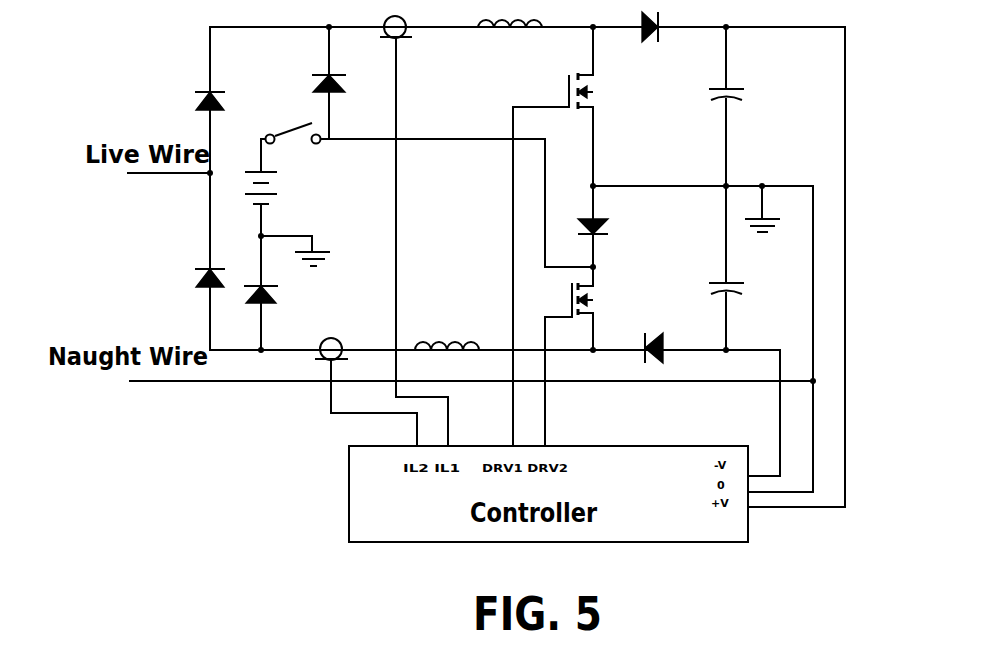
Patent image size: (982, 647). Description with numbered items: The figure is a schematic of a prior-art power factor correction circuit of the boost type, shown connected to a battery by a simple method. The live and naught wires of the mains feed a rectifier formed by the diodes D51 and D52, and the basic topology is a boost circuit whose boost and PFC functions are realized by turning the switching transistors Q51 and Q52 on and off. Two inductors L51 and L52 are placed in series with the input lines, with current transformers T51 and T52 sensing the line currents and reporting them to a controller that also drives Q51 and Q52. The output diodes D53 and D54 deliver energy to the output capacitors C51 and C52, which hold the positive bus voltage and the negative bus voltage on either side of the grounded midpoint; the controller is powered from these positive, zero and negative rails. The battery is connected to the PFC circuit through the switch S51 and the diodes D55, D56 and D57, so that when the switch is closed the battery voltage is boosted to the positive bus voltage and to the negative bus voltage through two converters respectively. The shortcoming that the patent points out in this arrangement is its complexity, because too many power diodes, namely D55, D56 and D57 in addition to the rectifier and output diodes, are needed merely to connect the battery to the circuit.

The rectifier diode D51 is at (248, 139).
The rectifier diode D52 is at (197, 267).
The boost output diode D53 is at (643, 39).
The boost output diode D54 is at (648, 333).
The diode D55 is at (308, 75).
The diode D56 is at (609, 235).
The diode D57 is at (285, 294).
The switch S51 is at (287, 127).
The current transformer T51 is at (411, 38).
The current transformer T52 is at (347, 339).
The inductor L51 is at (510, 40).
The inductor L52 is at (447, 335).
The MOSFET switch Q51 is at (551, 91).
The MOSFET switch Q52 is at (559, 300).
The output capacitor C51 is at (742, 106).
The output capacitor C52 is at (743, 301).